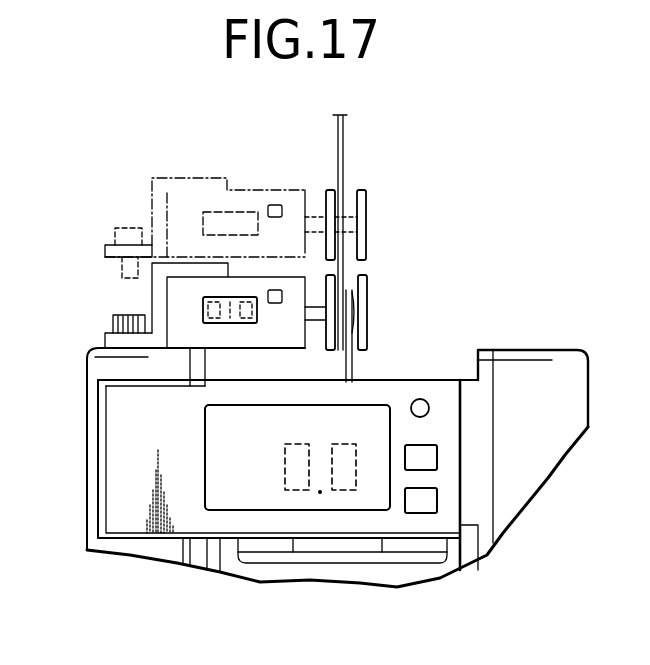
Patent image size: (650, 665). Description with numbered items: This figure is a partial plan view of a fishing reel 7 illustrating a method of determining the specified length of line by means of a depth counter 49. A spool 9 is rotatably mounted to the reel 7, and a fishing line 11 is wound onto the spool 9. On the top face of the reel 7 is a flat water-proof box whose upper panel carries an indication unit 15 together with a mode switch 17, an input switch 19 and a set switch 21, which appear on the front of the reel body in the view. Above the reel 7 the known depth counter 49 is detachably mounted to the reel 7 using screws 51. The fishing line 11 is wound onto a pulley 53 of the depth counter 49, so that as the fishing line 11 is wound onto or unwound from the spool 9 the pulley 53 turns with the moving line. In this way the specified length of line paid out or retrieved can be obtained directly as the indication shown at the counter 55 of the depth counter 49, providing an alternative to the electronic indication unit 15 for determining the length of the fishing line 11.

The reel 7 is at (547, 338).
The spool 9 is at (399, 577).
The fishing line 11 is at (352, 370).
The indication unit 15 is at (210, 497).
The mode switch 17 is at (430, 408).
The input switch 19 is at (437, 456).
The set switch 21 is at (437, 498).
The depth counter 49 is at (293, 285).
The screws 51 is at (115, 228).
The pulley 53 is at (367, 308).
The counter 55 is at (203, 312).